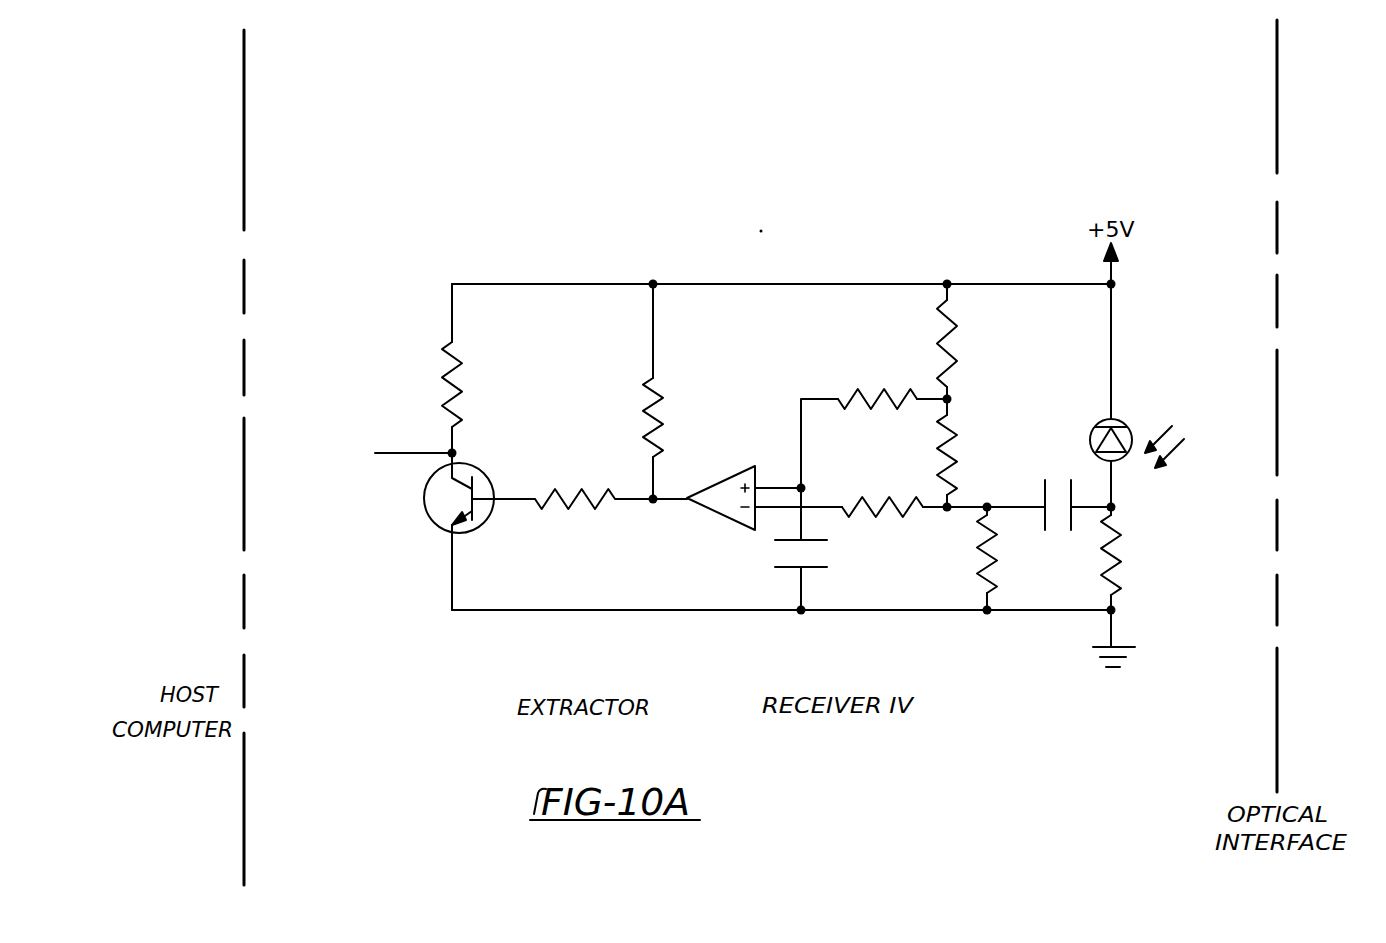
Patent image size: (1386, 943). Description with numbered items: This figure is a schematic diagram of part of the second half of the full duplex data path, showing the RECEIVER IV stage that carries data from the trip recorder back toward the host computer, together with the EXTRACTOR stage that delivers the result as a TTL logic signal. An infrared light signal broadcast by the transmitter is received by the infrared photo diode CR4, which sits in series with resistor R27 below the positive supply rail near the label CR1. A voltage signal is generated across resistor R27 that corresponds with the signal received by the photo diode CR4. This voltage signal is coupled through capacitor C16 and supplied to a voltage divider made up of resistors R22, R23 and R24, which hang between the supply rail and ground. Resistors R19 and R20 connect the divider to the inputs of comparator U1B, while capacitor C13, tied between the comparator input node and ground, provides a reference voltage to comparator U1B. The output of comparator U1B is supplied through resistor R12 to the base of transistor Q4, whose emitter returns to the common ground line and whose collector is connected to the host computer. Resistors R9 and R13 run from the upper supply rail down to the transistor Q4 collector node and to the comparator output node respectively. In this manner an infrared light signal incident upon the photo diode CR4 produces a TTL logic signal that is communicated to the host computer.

The resistor R9 is at (474, 384).
The transistor Q4 is at (469, 513).
The resistor R12 is at (573, 481).
The resistor R13 is at (683, 416).
The comparator U1B is at (725, 483).
The resistor R19 is at (877, 384).
The resistor R20 is at (882, 490).
The capacitor C13 is at (829, 554).
The resistor R22 is at (972, 343).
The resistor R23 is at (973, 455).
The capacitor C16 is at (1054, 491).
The resistor R24 is at (1011, 554).
The resistor R27 is at (1139, 555).
The supply connection CR1 is at (1146, 351).
The infrared photo diode CR4 is at (1137, 433).